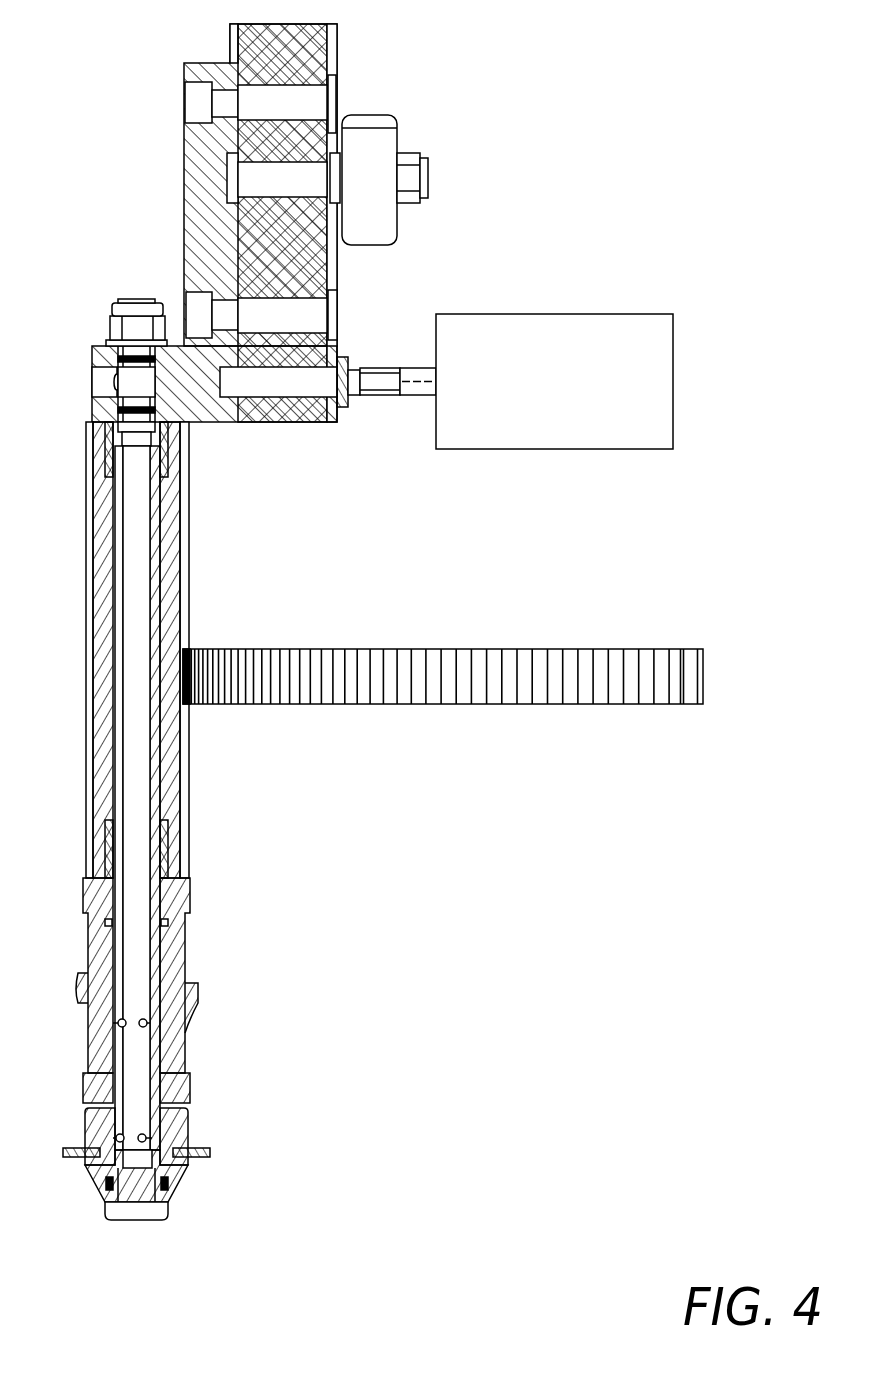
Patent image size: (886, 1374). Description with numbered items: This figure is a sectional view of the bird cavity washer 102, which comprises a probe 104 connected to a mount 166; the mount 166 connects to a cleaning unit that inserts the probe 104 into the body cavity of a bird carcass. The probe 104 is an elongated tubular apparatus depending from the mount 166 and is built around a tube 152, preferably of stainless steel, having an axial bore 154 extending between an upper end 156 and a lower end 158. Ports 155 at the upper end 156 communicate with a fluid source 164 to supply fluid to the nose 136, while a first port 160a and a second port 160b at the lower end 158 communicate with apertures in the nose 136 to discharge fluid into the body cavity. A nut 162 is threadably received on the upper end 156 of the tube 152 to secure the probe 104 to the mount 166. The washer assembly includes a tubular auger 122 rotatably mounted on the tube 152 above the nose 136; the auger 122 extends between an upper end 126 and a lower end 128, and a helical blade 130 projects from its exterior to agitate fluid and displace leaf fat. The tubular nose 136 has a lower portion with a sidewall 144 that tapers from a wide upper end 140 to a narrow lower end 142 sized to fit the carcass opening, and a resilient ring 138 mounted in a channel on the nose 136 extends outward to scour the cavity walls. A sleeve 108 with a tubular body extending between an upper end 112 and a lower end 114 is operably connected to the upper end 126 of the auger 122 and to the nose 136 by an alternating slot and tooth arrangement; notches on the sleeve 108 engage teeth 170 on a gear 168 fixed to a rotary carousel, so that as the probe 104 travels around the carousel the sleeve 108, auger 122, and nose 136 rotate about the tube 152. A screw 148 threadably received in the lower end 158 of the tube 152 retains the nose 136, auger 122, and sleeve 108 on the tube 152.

The bird cavity washer 102 is at (489, 753).
The probe 104 is at (336, 824).
The sleeve 108 is at (185, 512).
The upper end 112 is at (108, 428).
The lower end 114 is at (86, 860).
The auger 122 is at (187, 917).
The upper end 126 is at (190, 893).
The lower end 128 is at (188, 1080).
The helical blade 130 is at (78, 972).
The nose 136 is at (192, 1130).
The resilient ring 138 is at (211, 1152).
The upper end 140 is at (186, 1108).
The lower end 142 is at (165, 1190).
The sidewall 144 is at (170, 1165).
The screw 148 is at (160, 1222).
The tube 152 is at (158, 555).
The axial bore 154 is at (140, 470).
The ports 155 is at (138, 385).
The upper end 156 is at (140, 302).
The lower end 158 is at (135, 1160).
The first port 160a is at (120, 1025).
The second port 160b is at (140, 1136).
The nut 162 is at (110, 322).
The fluid source 164 is at (580, 450).
The mount 166 is at (402, 60).
The gear 168 is at (535, 649).
The teeth 170 is at (235, 670).